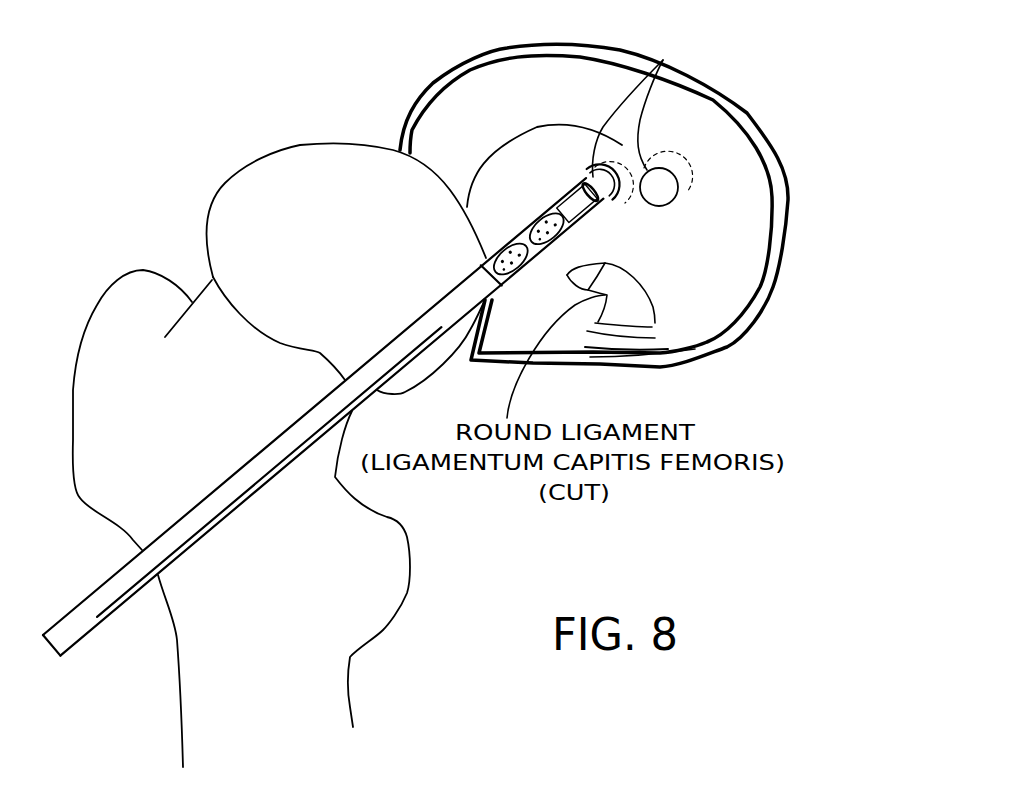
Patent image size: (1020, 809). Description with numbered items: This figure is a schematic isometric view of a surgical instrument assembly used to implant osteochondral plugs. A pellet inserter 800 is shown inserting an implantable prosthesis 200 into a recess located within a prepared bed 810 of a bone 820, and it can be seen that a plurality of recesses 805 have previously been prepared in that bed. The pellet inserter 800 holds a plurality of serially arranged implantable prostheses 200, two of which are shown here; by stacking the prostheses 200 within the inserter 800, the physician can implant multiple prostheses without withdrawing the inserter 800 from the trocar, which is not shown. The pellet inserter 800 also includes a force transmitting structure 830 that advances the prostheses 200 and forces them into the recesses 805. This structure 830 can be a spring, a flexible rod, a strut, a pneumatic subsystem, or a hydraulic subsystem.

The implantable prosthesis 200 is at (552, 212).
The pellet inserter 800 is at (102, 582).
The recesses 805 is at (663, 60).
The prepared bed 810 is at (655, 145).
The bone 820 is at (782, 192).
The force transmitting structure 830 is at (190, 522).